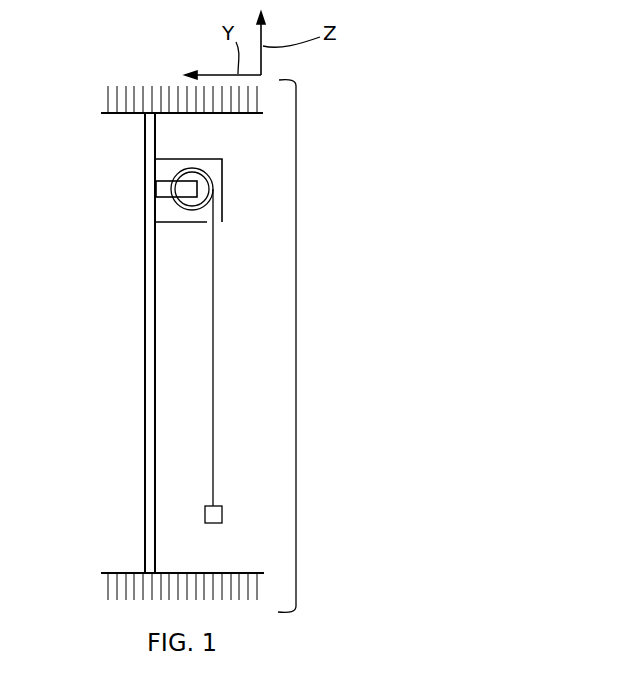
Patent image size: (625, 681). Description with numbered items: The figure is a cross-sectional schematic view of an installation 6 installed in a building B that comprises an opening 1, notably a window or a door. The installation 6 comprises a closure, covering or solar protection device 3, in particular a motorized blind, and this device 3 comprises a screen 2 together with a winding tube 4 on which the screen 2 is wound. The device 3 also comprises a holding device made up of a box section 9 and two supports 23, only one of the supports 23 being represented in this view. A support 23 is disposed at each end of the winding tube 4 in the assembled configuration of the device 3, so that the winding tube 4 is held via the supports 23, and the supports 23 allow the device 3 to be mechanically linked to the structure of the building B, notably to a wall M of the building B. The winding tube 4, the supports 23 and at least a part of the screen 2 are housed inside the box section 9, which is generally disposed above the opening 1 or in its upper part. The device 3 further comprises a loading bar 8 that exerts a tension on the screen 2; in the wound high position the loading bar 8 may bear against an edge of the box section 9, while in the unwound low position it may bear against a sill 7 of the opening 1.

The opening 1 is at (127, 284).
The screen 2 is at (213, 325).
The closure, covering or solar protection device 3 is at (178, 172).
The winding tube 4 is at (186, 174).
The installation 6 is at (296, 345).
The sill 7 is at (125, 573).
The loading bar 8 is at (217, 514).
The box section 9 is at (222, 195).
The support 23 is at (168, 190).
The building B is at (108, 102).
The wall M is at (150, 401).